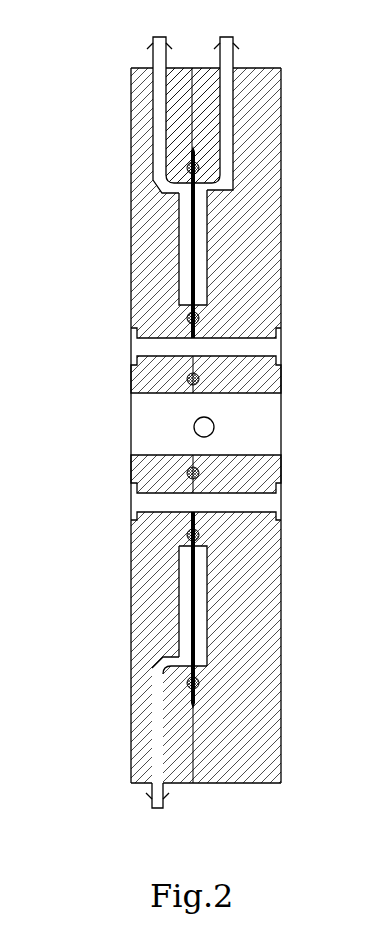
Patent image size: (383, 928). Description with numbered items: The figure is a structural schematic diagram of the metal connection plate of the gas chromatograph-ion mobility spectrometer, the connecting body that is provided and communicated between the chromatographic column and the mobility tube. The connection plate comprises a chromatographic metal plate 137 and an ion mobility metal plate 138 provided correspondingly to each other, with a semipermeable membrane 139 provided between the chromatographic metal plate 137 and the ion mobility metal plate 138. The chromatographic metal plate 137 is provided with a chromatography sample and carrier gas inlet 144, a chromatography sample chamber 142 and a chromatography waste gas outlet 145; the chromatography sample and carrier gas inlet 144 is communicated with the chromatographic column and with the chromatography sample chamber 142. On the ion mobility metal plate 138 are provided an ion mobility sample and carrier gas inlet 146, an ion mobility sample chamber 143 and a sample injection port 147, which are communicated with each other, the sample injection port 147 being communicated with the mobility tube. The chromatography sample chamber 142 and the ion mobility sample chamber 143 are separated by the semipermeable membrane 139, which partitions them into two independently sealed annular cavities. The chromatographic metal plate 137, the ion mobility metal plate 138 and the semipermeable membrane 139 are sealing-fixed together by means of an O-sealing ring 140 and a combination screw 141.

The chromatographic metal plate 137 is at (158, 562).
The ion mobility metal plate 138 is at (220, 535).
The semipermeable membrane 139 is at (195, 264).
The O-sealing ring 140 is at (190, 166).
The combination screw 141 is at (130, 498).
The chromatography sample chamber 142 is at (185, 275).
The ion mobility sample chamber 143 is at (199, 237).
The chromatography sample and carrier gas inlet 144 is at (150, 44).
The chromatography waste gas outlet 145 is at (150, 797).
The ion mobility sample and carrier gas inlet 146 is at (222, 44).
The sample injection port 147 is at (208, 427).